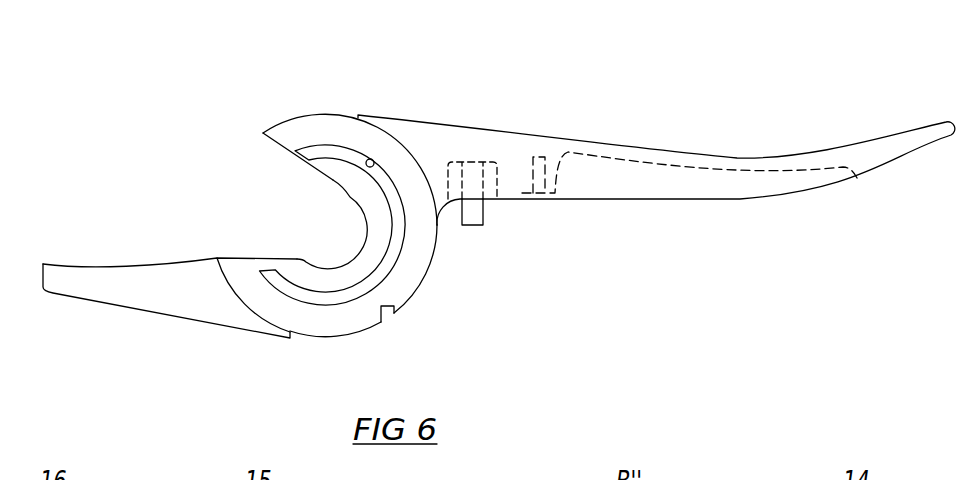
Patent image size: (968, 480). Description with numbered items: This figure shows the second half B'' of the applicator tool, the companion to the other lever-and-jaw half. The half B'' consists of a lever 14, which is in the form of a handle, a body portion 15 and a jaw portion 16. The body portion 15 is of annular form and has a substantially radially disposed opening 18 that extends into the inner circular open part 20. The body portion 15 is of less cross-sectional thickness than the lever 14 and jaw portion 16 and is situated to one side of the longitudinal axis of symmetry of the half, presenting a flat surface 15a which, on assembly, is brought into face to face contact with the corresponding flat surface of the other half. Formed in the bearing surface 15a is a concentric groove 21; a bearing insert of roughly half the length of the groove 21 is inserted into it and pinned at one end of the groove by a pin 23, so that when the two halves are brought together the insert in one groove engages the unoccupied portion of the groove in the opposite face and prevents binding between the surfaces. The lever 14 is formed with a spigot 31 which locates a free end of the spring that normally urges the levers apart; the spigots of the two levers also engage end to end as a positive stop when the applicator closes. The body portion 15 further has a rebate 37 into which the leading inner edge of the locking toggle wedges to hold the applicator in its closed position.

The lever 14 is at (758, 162).
The body portion 15 is at (350, 259).
The flat surface 15a is at (410, 258).
The jaw portion 16 is at (137, 298).
The opening 18 is at (252, 188).
The inner circular open part 20 is at (358, 223).
The groove 21 is at (292, 298).
The pin 23 is at (373, 159).
The spigot 31 is at (475, 210).
The rebate 37 is at (387, 313).
The applicator half B is at (558, 132).